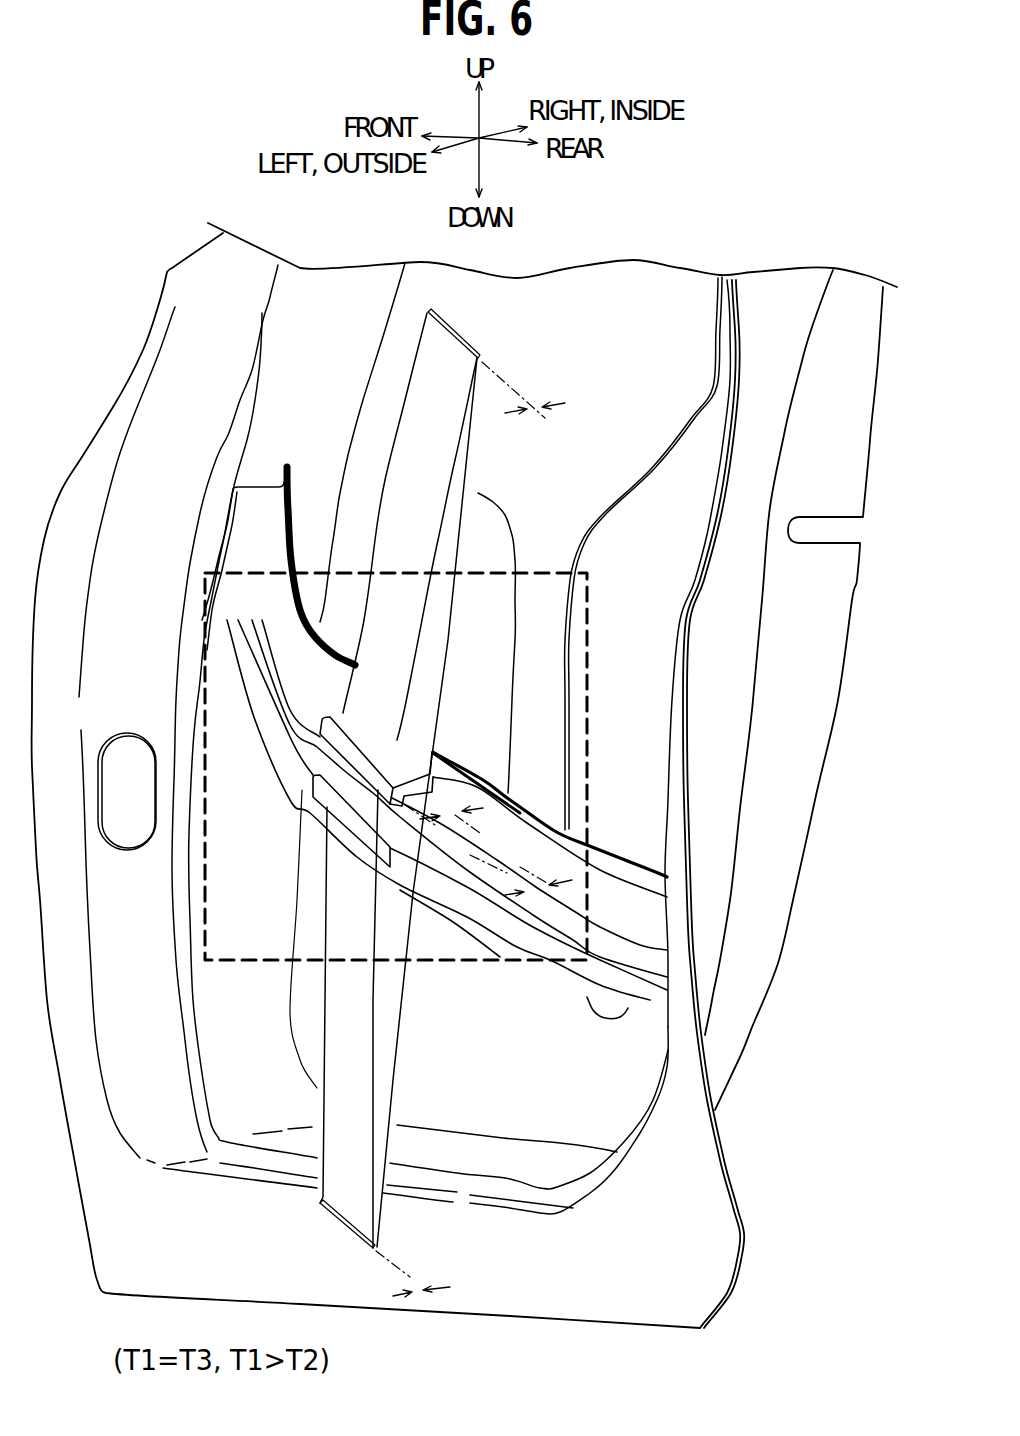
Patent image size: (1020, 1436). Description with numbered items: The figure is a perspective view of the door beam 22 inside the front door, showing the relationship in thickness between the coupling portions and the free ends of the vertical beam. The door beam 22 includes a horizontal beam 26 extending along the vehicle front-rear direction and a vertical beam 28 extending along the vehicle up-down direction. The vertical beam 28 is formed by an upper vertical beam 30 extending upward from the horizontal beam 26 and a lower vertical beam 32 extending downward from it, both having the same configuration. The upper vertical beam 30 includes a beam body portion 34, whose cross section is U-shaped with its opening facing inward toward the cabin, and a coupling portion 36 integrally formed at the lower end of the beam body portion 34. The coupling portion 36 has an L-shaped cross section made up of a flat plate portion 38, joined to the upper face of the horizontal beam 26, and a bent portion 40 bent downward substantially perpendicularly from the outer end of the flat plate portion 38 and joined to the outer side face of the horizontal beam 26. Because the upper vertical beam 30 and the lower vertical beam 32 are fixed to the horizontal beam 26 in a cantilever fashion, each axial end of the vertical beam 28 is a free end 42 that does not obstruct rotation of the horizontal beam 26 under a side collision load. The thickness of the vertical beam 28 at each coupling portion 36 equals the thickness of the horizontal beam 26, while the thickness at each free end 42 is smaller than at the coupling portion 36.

The door beam 22 is at (307, 813).
The horizontal beam 26 is at (243, 707).
The vertical beam 28 is at (470, 555).
The upper vertical beam 30 is at (413, 480).
The lower vertical beam 32 is at (343, 1032).
The beam body portion 34 is at (460, 470).
The coupling portion 36 is at (443, 768).
The flat plate portion 38 is at (425, 770).
The bent portion 40 is at (327, 753).
The free end 42 is at (457, 337).